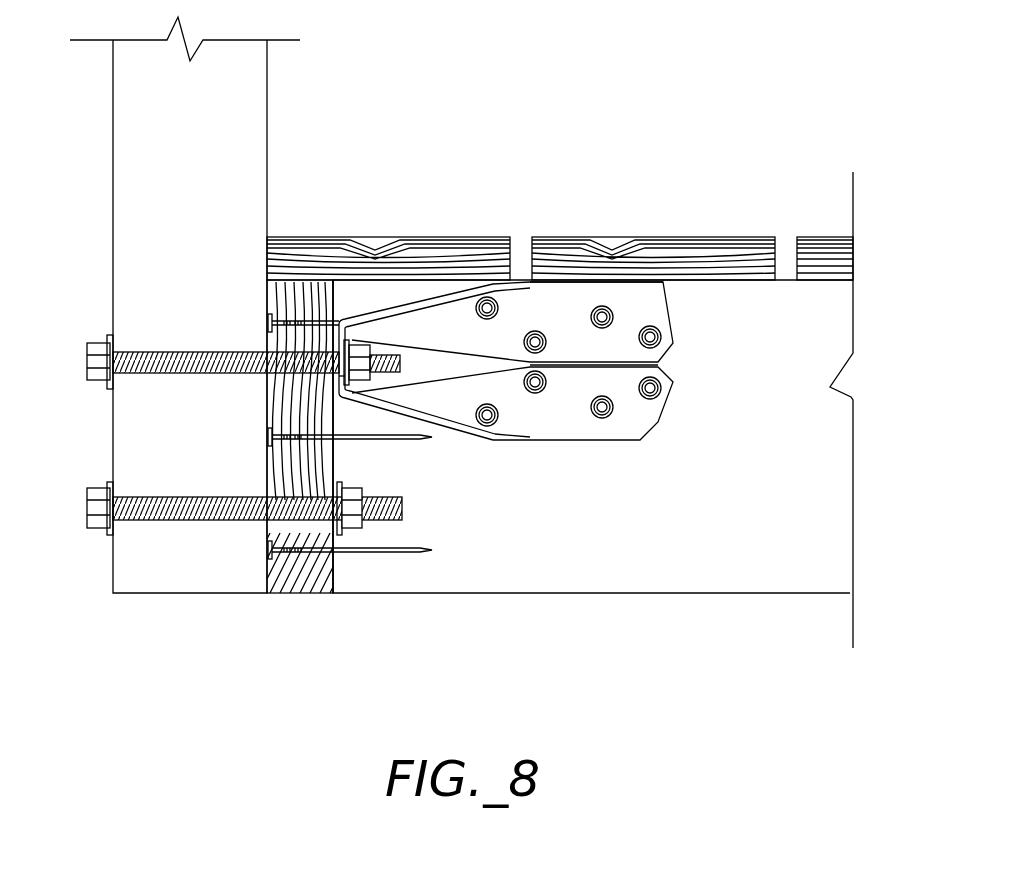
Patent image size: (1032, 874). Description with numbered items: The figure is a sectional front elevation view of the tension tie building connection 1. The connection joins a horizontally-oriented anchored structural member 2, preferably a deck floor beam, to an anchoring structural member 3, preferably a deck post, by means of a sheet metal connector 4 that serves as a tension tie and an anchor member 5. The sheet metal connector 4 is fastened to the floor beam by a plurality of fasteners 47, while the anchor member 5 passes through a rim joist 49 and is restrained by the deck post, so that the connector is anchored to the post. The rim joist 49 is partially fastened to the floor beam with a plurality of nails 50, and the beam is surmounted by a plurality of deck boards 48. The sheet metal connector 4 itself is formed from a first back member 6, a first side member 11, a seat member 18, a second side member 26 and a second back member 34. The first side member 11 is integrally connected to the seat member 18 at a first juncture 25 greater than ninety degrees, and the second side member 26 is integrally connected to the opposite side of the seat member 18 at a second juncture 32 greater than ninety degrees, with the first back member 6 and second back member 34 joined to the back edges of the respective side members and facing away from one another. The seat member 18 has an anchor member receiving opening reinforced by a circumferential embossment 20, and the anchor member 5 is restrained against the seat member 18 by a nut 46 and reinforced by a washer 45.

The building connection 1 is at (482, 381).
The anchored structural member 2 is at (635, 593).
The anchoring structural member 3 is at (177, 593).
The sheet metal connector 4 is at (519, 273).
The anchor member 5 is at (153, 352).
The first back member 6 is at (660, 430).
The first side member 11 is at (458, 436).
The seat member 18 is at (332, 400).
The circumferential embossment 20 is at (337, 380).
The first juncture 25 is at (305, 593).
The second side member 26 is at (413, 300).
The second juncture 32 is at (350, 328).
The second back member 34 is at (658, 297).
The washer 45 is at (360, 363).
The nut 46 is at (355, 327).
The fasteners 47 is at (533, 337).
The deck boards 48 is at (297, 237).
The rim joist 49 is at (278, 593).
The nails 50 is at (282, 313).